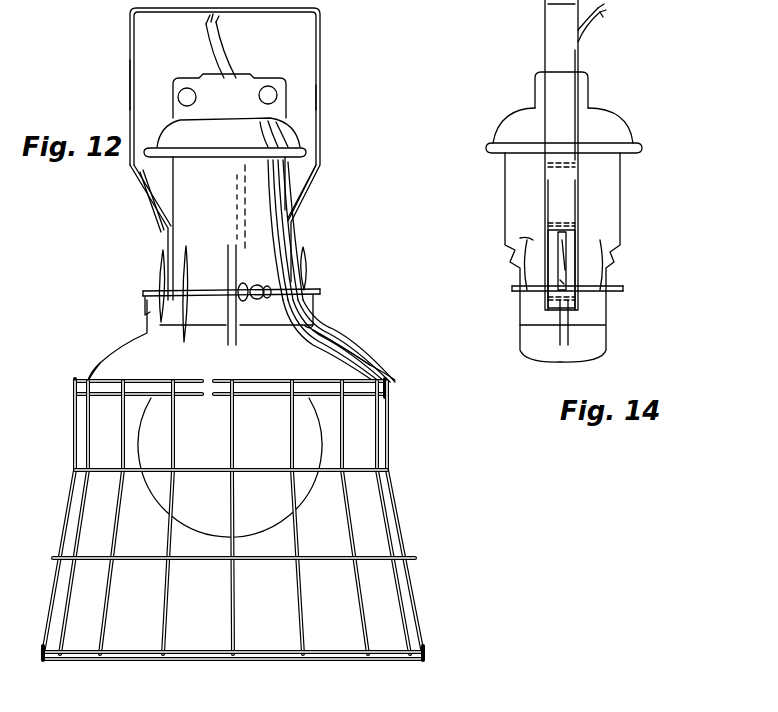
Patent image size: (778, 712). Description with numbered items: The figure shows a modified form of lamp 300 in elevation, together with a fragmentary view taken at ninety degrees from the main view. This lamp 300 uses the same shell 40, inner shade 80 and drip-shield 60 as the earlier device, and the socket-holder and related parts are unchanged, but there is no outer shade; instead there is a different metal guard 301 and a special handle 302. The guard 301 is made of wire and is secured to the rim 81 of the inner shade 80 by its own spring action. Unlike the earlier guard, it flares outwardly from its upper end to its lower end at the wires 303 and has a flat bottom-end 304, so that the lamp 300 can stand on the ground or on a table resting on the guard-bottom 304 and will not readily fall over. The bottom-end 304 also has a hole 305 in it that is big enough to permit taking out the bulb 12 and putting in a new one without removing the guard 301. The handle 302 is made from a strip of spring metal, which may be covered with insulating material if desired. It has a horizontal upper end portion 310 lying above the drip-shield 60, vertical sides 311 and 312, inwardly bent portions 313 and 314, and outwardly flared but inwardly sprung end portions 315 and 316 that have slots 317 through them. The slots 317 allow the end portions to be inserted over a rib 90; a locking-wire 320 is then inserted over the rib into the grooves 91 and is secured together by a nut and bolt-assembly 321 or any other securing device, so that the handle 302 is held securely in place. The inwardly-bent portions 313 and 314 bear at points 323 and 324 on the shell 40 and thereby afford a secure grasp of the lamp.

In FIG. 12, the bulb 12 is at (266, 504).
In FIG. 12, the shell 40 is at (213, 186).
In FIG. 14, the shell 40 is at (620, 192).
In FIG. 12, the drip-shield 60 is at (293, 132).
In FIG. 14, the drip-shield 60 is at (622, 121).
In FIG. 12, the inner shade 80 is at (106, 363).
In FIG. 12, the rim 81 is at (100, 392).
In FIG. 12, the rib 90 is at (178, 268).
In FIG. 14, the rib 90 is at (600, 276).
In FIG. 12, the grooves 91 is at (250, 287).
In FIG. 14, the grooves 91 is at (560, 318).
In FIG. 12, the lamp 300 is at (355, 338).
In FIG. 12, the guard 301 is at (427, 627).
In FIG. 12, the handle 302 is at (320, 70).
In FIG. 14, the handle 302 is at (544, 20).
In FIG. 12, the wires 303 is at (108, 594).
In FIG. 12, the bottom-end 304 is at (352, 652).
In FIG. 12, the hole 305 is at (240, 662).
In FIG. 12, the horizontal upper end portion 310 is at (290, 12).
In FIG. 12, the vertical side 311 is at (130, 82).
In FIG. 12, the vertical side 312 is at (320, 96).
In FIG. 14, the vertical side 312 is at (572, 62).
In FIG. 12, the inwardly bent portion 313 is at (148, 204).
In FIG. 12, the inwardly bent portion 314 is at (310, 192).
In FIG. 14, the inwardly bent portion 314 is at (550, 202).
In FIG. 12, the end portion 315 is at (162, 265).
In FIG. 12, the end portion 316 is at (308, 260).
In FIG. 14, the end portion 316 is at (548, 270).
In FIG. 14, the slots 317 is at (566, 252).
In FIG. 12, the locking-wire 320 is at (203, 297).
In FIG. 14, the locking-wire 320 is at (622, 292).
In FIG. 12, the nut and bolt-assembly 321 is at (249, 297).
In FIG. 12, the bearing point 323 is at (178, 236).
In FIG. 12, the bearing point 324 is at (283, 223).